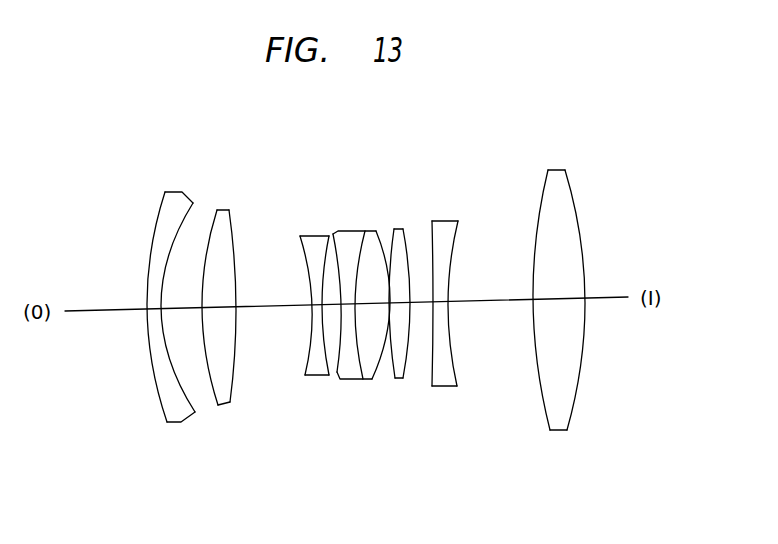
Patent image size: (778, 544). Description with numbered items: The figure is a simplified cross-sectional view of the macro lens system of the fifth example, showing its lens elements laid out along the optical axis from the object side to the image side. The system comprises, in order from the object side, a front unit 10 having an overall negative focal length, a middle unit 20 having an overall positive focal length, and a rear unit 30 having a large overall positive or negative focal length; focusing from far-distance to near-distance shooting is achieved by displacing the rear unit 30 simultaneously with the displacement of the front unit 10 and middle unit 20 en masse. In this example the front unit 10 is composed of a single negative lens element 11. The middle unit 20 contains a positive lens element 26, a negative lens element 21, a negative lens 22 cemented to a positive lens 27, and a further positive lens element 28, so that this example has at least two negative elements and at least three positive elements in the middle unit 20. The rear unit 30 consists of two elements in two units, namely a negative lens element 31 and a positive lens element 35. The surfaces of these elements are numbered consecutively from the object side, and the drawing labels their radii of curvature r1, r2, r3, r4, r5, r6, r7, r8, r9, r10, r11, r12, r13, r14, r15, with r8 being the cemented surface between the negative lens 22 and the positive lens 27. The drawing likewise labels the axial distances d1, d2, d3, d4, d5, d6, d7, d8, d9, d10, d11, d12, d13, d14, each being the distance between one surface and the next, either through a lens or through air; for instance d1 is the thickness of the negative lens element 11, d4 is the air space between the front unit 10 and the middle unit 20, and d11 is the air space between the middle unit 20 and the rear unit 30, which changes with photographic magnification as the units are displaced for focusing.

The front unit 10 is at (183, 329).
The negative lens element 11 is at (171, 294).
The positive lens element 26 is at (217, 289).
The middle unit 20 is at (353, 321).
The negative lens element 21 is at (301, 296).
The negative lens 22 is at (350, 279).
The positive lens 27 is at (375, 304).
The positive lens element 28 is at (428, 269).
The negative lens element 31 is at (464, 290).
The rear unit 30 is at (510, 318).
The positive lens element 35 is at (554, 280).
The radius of curvature of lens plane 1 r1 is at (165, 192).
The radius of curvature of lens plane 2 r2 is at (193, 200).
The radius of curvature of lens plane 3 r3 is at (216, 210).
The radius of curvature of lens plane 4 r4 is at (230, 210).
The radius of curvature of lens plane 5 r5 is at (300, 237).
The radius of curvature of lens plane 6 r6 is at (327, 237).
The radius of curvature of lens plane 7 r7 is at (337, 230).
The radius of curvature of lens plane 8 r8 is at (355, 231).
The radius of curvature of lens plane 9 r9 is at (390, 302).
The radius of curvature of lens plane 10 r10 is at (389, 302).
The radius of curvature of lens plane 11 r11 is at (404, 229).
The radius of curvature of lens plane 12 r12 is at (433, 221).
The radius of curvature of lens plane 13 r13 is at (458, 221).
The radius of curvature of lens plane 14 r14 is at (549, 170).
The radius of curvature of lens plane 15 r15 is at (565, 170).
The distance between plane 1 and plane 2 d1 is at (151, 306).
The distance between plane 2 and plane 3 d2 is at (181, 307).
The distance between plane 3 and plane 4 d3 is at (222, 307).
The distance between plane 4 and plane 5 d4 is at (268, 306).
The distance between plane 5 and plane 6 d5 is at (317, 305).
The distance between plane 6 and plane 7 d6 is at (331, 304).
The distance between plane 7 and plane 8 d7 is at (348, 304).
The distance between plane 8 and plane 9 d8 is at (385, 304).
The distance between plane 9 and plane 10 d9 is at (387, 303).
The distance between plane 10 and plane 11 d10 is at (405, 303).
The distance between plane 11 and plane 12 d11 is at (422, 303).
The distance between plane 12 and plane 13 d12 is at (440, 307).
The distance between plane 13 and plane 14 d13 is at (487, 298).
The distance between plane 14 and plane 15 d14 is at (556, 298).